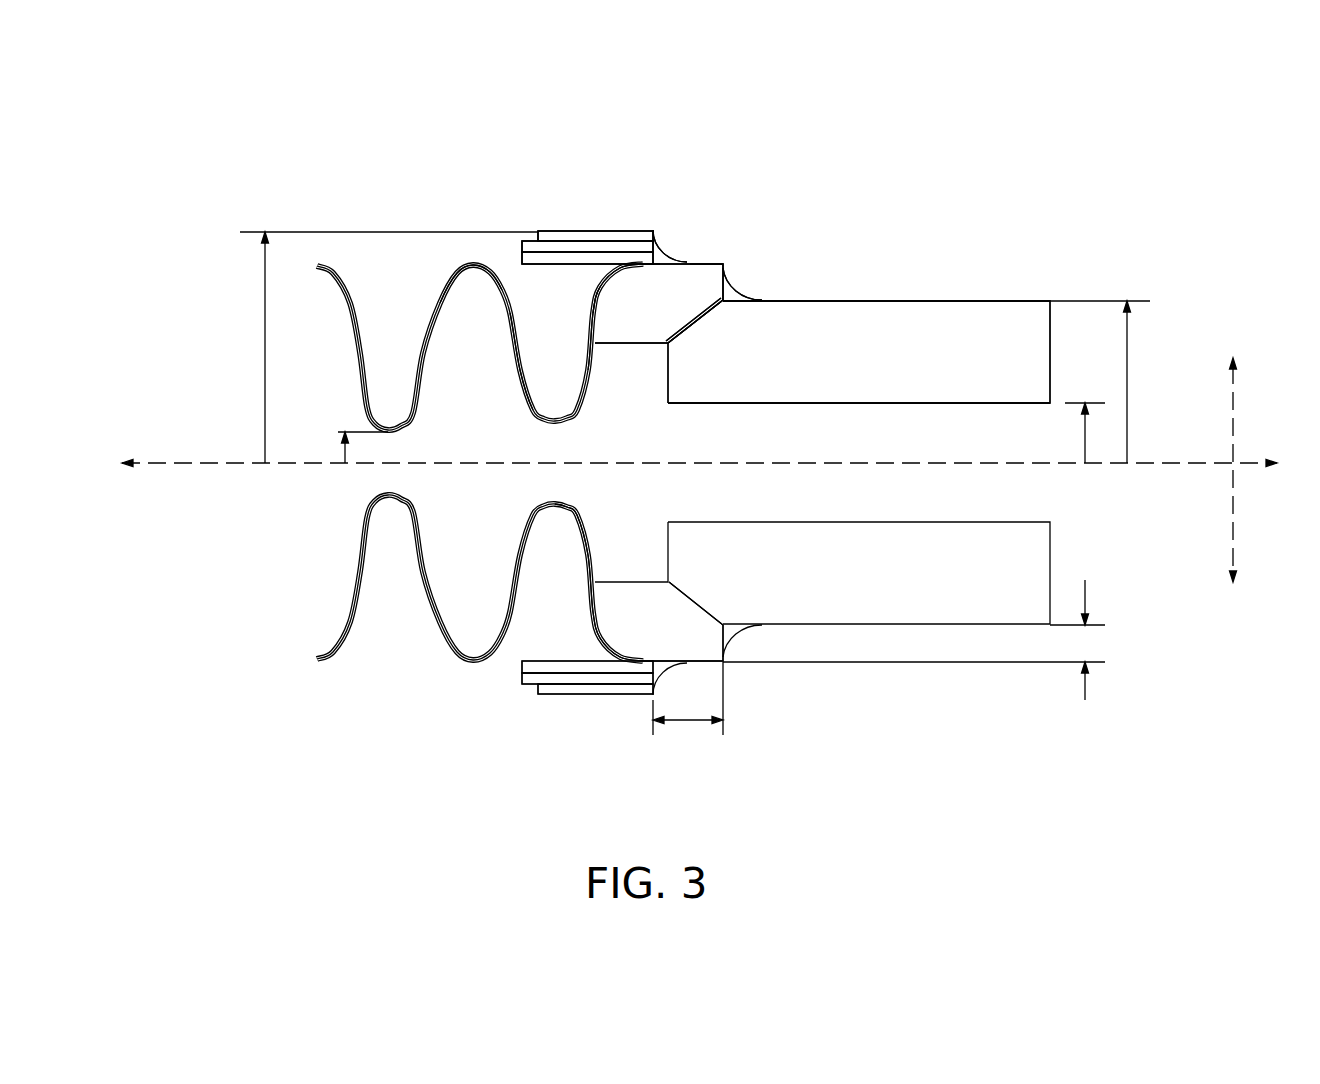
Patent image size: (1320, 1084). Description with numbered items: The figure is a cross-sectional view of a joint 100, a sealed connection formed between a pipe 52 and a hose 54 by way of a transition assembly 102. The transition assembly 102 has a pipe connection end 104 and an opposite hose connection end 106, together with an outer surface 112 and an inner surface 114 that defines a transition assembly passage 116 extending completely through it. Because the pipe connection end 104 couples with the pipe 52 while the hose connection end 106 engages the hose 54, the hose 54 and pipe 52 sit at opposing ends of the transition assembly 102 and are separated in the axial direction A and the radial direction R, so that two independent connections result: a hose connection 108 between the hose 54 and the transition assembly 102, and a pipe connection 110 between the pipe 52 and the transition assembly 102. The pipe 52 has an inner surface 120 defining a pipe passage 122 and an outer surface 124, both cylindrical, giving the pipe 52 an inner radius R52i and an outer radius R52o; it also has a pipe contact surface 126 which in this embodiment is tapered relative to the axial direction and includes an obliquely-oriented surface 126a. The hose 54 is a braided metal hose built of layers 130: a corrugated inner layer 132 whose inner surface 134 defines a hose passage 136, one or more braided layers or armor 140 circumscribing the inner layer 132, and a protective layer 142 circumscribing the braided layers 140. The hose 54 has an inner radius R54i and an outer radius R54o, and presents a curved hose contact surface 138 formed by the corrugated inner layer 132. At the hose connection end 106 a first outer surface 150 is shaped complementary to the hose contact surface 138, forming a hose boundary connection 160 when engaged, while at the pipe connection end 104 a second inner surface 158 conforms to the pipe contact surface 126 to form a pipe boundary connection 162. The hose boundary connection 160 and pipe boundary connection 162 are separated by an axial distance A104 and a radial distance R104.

The joint 100 is at (802, 150).
The hose 54 is at (546, 218).
The protective layer 142 is at (540, 231).
The braided layers and/or armor 140 is at (521, 247).
The layers 130 is at (470, 255).
The inner layer 132 is at (437, 295).
The hose contact surface 138 is at (597, 300).
The inner surface 134 is at (518, 342).
The hose connection end 106 is at (626, 274).
The hose connection 108 is at (670, 257).
The second inner surface 158 is at (682, 322).
The outer surface 112 is at (700, 272).
The pipe connection end 104 is at (709, 286).
The pipe connection 110 is at (737, 283).
The outer surface 124 is at (878, 300).
The pipe 52 is at (987, 320).
The inner surface 114 is at (646, 282).
The first outer surface 150 is at (598, 312).
The hose boundary connection 160 is at (648, 365).
The obliquely-oriented surface 126a is at (690, 326).
The pipe contact surface 126 is at (695, 320).
The pipe boundary connection 162 is at (743, 322).
The inner surface 120 is at (945, 404).
The pipe passage 122 is at (1005, 485).
The hose passage 136 is at (473, 497).
The transition assembly passage 116 is at (628, 527).
The transition assembly 102 is at (643, 625).
The outer radius R54o is at (262, 355).
The inner radius R54i is at (344, 445).
The outer radius R52o is at (1127, 363).
The inner radius R52i is at (1085, 445).
The radial distance R104 is at (1090, 641).
The axial distance A104 is at (690, 722).
The radial direction R is at (1230, 410).
The axial direction A is at (1248, 462).